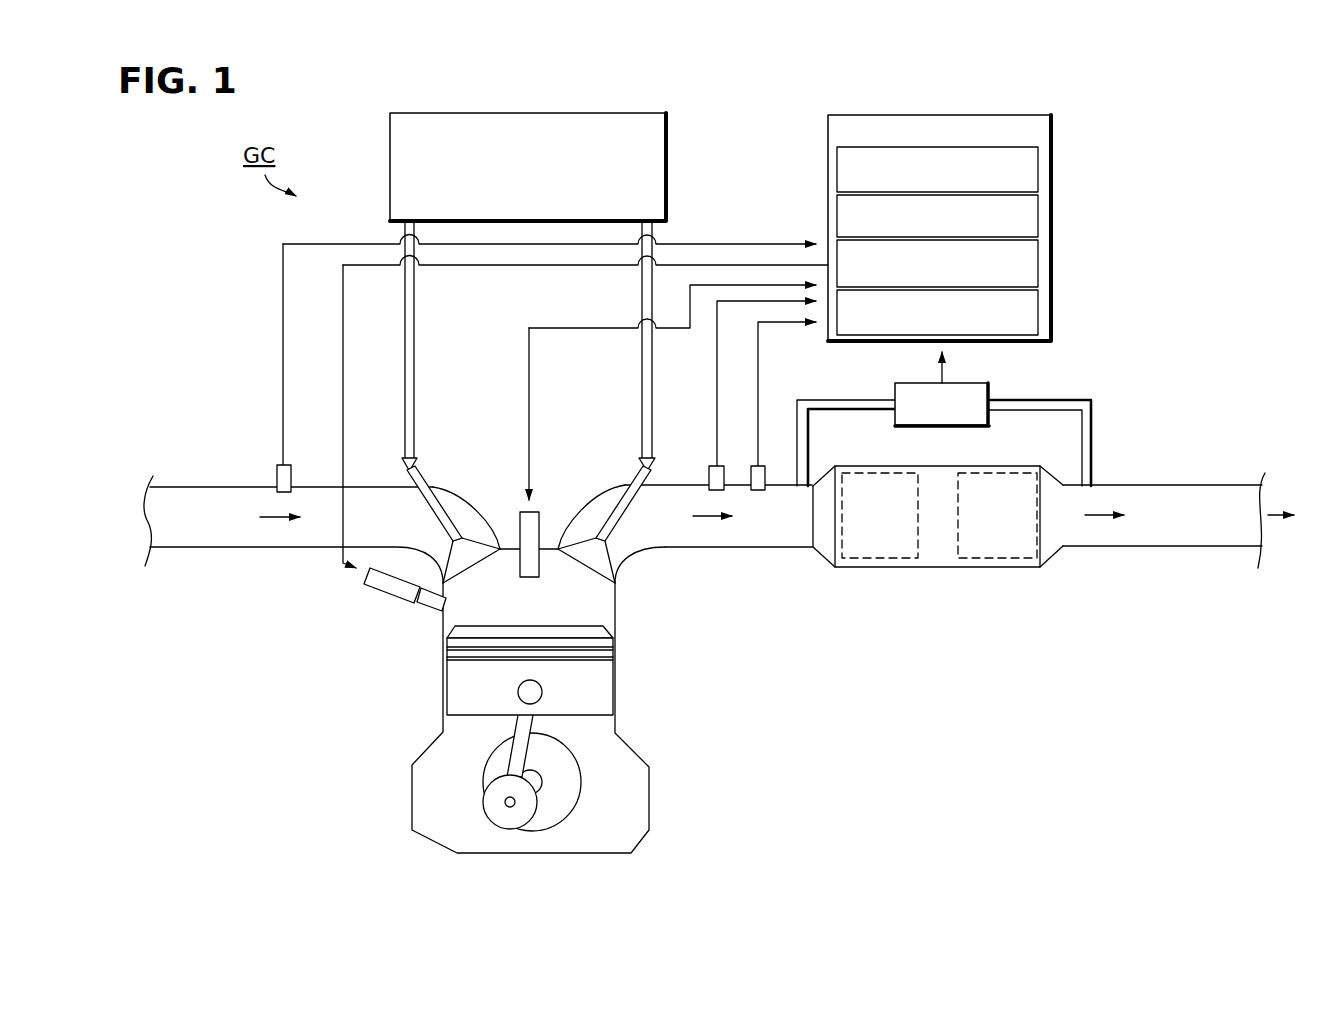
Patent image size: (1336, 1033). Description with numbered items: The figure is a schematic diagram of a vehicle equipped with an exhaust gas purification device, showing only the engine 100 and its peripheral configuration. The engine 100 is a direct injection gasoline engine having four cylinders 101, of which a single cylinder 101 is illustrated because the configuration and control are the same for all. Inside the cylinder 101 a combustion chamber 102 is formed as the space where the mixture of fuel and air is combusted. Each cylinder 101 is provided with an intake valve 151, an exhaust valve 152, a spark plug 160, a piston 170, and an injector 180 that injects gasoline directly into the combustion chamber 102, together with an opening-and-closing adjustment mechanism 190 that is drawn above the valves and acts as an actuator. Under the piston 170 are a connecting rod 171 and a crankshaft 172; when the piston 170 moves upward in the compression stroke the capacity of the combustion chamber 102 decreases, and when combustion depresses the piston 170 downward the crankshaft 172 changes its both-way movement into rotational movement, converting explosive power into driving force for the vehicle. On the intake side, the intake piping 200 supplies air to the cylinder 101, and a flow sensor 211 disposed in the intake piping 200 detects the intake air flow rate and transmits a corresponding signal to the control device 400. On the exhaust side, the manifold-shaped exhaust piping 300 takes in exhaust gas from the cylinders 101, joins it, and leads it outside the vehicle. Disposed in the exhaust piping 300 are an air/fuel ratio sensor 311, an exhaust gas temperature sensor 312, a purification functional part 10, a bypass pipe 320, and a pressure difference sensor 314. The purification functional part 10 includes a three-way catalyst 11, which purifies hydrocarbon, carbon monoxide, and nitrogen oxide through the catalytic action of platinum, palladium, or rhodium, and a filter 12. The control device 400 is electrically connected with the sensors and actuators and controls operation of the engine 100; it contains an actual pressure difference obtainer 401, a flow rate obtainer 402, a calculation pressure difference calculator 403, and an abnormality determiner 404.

The purification functional part 10 is at (944, 584).
The three-way catalyst 11 is at (880, 560).
The filter 12 is at (1016, 567).
The engine 100 is at (533, 669).
The cylinder 101 is at (617, 660).
The combustion chamber 102 is at (582, 605).
The intake valve 151 is at (422, 476).
The exhaust valve 152 is at (638, 470).
The spark plug 160 is at (540, 530).
The piston 170 is at (617, 700).
The connecting rod 171 is at (520, 752).
The crankshaft 172 is at (585, 792).
The injector 180 is at (397, 600).
The opening-and-closing adjustment mechanism 190 is at (668, 142).
The intake piping 200 is at (183, 486).
The flow sensor 211 is at (278, 467).
The exhaust piping 300 is at (760, 548).
The air/fuel ratio sensor 311 is at (709, 466).
The exhaust gas temperature sensor 312 is at (765, 466).
The pressure difference sensor 314 is at (990, 392).
The bypass pipe 320 is at (1094, 428).
The control device 400 is at (1022, 228).
The actual pressure difference obtainer 401 is at (1050, 160).
The flow rate obtainer 402 is at (1050, 207).
The calculation pressure difference calculator 403 is at (1050, 250).
The abnormality determiner 404 is at (1050, 297).